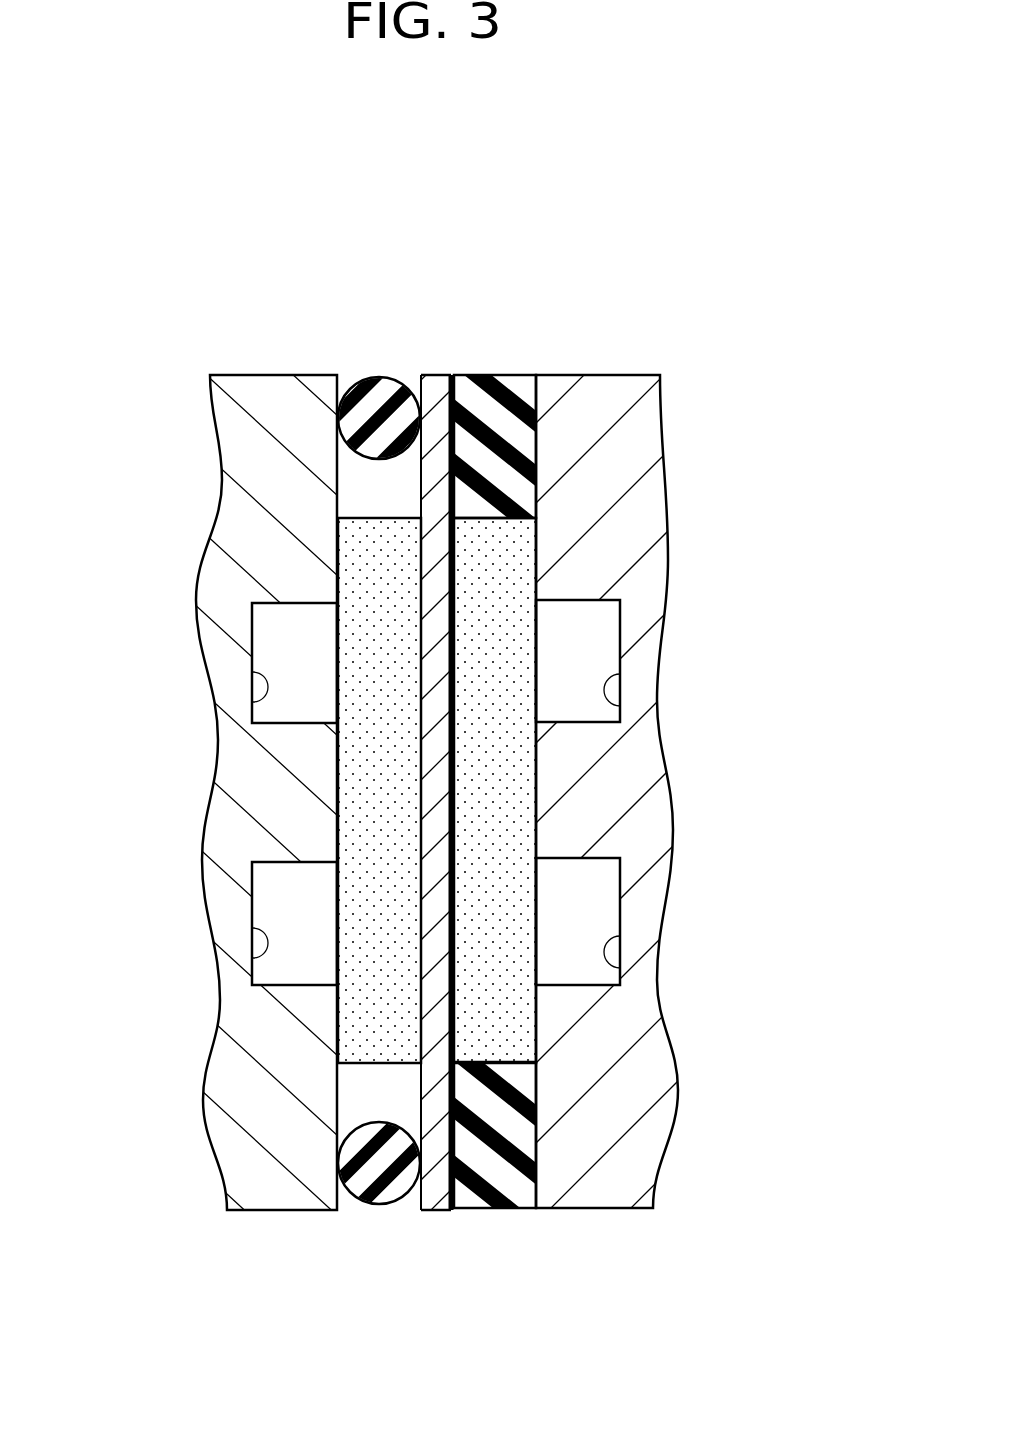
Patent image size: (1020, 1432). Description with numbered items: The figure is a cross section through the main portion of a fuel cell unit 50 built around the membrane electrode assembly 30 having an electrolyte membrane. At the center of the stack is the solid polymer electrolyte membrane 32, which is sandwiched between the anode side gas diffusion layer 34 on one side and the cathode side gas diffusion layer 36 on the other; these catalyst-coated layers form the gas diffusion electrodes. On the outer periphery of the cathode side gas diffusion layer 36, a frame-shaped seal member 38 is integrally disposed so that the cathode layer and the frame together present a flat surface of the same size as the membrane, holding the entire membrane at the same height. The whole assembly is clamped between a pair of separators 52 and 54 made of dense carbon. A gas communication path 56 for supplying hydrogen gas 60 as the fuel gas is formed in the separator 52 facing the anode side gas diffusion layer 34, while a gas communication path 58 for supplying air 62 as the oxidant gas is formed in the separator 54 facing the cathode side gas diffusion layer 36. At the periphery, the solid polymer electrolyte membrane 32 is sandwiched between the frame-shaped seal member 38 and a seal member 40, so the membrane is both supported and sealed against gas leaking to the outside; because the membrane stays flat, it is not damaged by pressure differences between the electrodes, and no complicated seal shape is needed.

The membrane electrode assembly 30 is at (542, 230).
The solid polymer electrolyte membrane 32 is at (435, 383).
The anode side gas diffusion layer 34 is at (386, 540).
The cathode side gas diffusion layer 36 is at (510, 550).
The frame-shaped seal member 38 is at (468, 388).
The seal member 40 is at (345, 427).
The fuel cell unit 50 is at (553, 300).
The separator 52 is at (258, 395).
The separator 54 is at (612, 393).
The gas communication path 56 is at (253, 700).
The gas communication path 58 is at (620, 706).
The hydrogen gas 60 is at (277, 637).
The air 62 is at (573, 637).